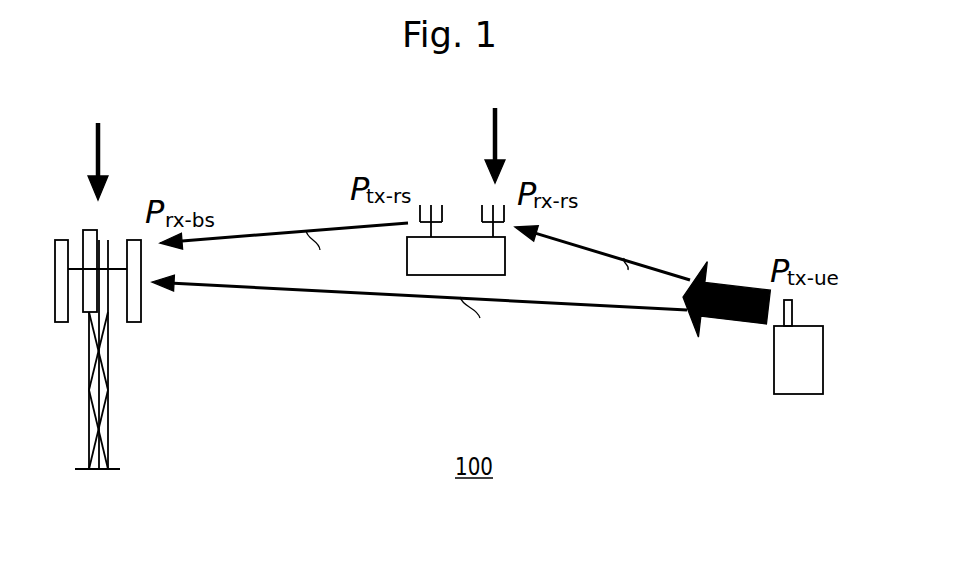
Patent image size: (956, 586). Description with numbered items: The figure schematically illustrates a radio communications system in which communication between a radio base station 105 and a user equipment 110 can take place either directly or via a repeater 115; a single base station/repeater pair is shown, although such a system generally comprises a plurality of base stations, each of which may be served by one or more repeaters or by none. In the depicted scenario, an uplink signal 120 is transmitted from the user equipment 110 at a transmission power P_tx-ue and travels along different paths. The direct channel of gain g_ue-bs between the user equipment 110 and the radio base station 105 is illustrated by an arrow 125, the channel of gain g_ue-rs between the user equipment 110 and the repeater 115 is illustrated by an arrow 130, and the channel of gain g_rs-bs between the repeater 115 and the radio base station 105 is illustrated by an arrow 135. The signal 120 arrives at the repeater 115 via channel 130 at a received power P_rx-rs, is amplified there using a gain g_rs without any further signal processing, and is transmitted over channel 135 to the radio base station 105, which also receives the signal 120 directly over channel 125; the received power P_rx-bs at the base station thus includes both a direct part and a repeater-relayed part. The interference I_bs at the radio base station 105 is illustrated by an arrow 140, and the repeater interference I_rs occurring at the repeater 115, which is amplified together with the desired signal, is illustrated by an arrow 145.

The radio base station 105 is at (108, 425).
The user equipment 110 is at (800, 395).
The repeater 115 is at (506, 252).
The uplink signal 120 is at (726, 320).
The arrow illustrating direct channel 125 is at (565, 303).
The arrow illustrating UE-to-repeater channel 130 is at (652, 263).
The arrow illustrating repeater-to-base-station channel 135 is at (292, 232).
The arrow illustrating base station interference 140 is at (101, 150).
The arrow illustrating repeater interference 145 is at (498, 130).